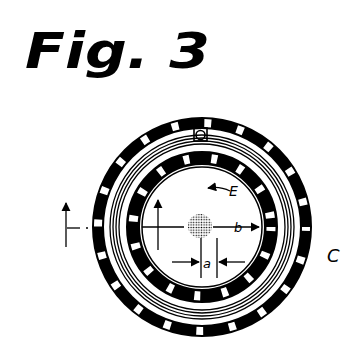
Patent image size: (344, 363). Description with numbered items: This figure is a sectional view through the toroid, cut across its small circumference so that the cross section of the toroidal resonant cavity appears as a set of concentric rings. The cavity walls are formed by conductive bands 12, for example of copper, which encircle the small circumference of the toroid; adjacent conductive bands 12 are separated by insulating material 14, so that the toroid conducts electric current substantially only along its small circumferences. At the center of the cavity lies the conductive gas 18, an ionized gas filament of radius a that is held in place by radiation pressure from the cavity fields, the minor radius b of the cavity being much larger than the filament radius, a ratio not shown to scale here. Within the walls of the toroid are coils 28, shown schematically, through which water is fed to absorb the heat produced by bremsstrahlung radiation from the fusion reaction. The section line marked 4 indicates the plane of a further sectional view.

The conductive bands 12 is at (150, 184).
The insulating material 14 is at (224, 152).
The conductive gas 18 is at (195, 215).
The coils 28 is at (186, 127).
The section line 4- 4 is at (100, 225).